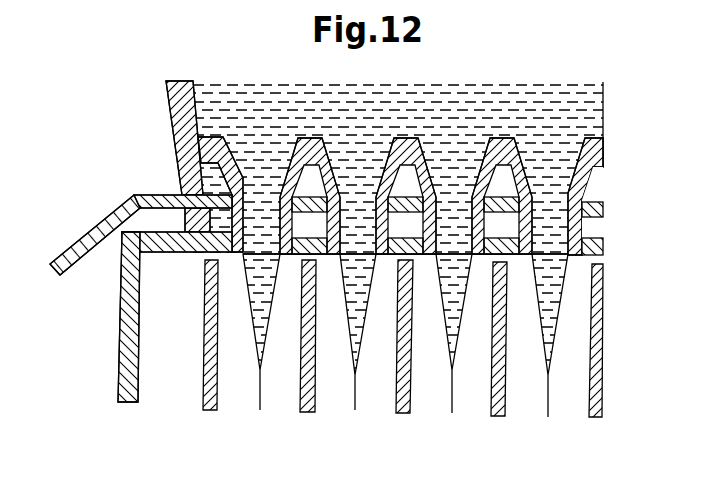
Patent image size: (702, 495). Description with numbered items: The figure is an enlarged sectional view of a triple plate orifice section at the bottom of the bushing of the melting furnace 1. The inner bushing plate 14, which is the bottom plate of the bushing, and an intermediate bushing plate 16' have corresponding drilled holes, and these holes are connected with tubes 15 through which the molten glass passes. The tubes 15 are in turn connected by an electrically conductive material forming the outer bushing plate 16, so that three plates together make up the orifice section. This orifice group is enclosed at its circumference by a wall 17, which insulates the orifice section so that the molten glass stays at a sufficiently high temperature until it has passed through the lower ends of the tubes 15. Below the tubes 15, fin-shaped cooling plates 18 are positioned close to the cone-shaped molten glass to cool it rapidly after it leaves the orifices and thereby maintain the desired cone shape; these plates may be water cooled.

The melting furnace 1 is at (160, 89).
The inner bushing plate 14 is at (205, 150).
The tubes 15 is at (188, 223).
The outer bushing plate 16 is at (108, 317).
The intermediate bushing plate 16' is at (95, 235).
The wall 17 is at (188, 174).
The fin-shaped cooling plates 18 is at (213, 411).